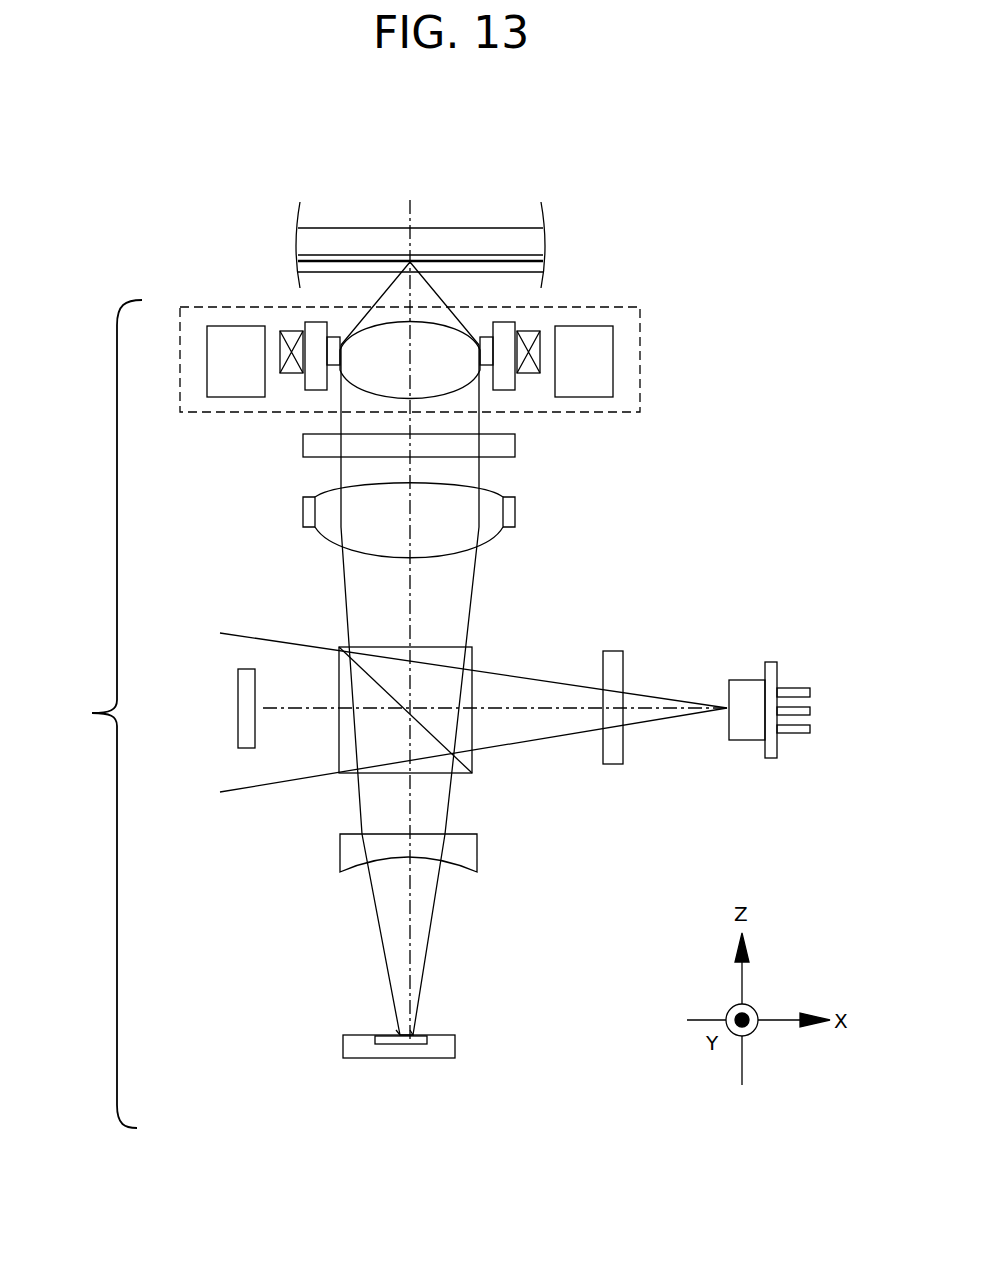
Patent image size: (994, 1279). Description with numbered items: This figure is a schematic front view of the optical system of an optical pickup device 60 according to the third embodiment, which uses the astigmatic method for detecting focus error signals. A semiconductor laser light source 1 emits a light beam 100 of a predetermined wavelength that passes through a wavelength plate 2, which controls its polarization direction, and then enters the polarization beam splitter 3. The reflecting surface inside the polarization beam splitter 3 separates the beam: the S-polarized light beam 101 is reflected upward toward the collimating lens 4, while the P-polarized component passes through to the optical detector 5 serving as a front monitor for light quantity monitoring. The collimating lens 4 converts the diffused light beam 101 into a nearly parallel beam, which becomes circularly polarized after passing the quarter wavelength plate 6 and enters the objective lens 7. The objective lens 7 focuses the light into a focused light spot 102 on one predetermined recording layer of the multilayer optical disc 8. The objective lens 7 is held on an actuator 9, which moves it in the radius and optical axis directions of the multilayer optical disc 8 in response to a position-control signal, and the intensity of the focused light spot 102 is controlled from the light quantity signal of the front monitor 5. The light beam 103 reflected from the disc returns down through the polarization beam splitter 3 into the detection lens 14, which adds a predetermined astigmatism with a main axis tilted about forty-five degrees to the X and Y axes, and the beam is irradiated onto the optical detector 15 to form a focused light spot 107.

The semiconductor laser light source 1 is at (752, 682).
The wavelength plate 2 is at (612, 657).
The polarization beam splitter 3 is at (340, 670).
The collimating lens 4 is at (508, 510).
The optical detector (front monitor) 5 is at (243, 690).
The 1/4 wavelength plate 6 is at (515, 445).
The objective lens 7 is at (373, 352).
The multilayer optical disc 8 is at (485, 237).
The actuator 9 is at (592, 307).
The detection lens 14 is at (463, 852).
The optical detector 15 is at (452, 1047).
The optical pickup device 60 is at (98, 714).
The light beam 100 is at (535, 685).
The light beam (S polarization component) 101 is at (442, 588).
The focused light spot 102 is at (410, 262).
The light beam (reflected) 103 is at (427, 798).
The focused light spot 107 is at (400, 1033).